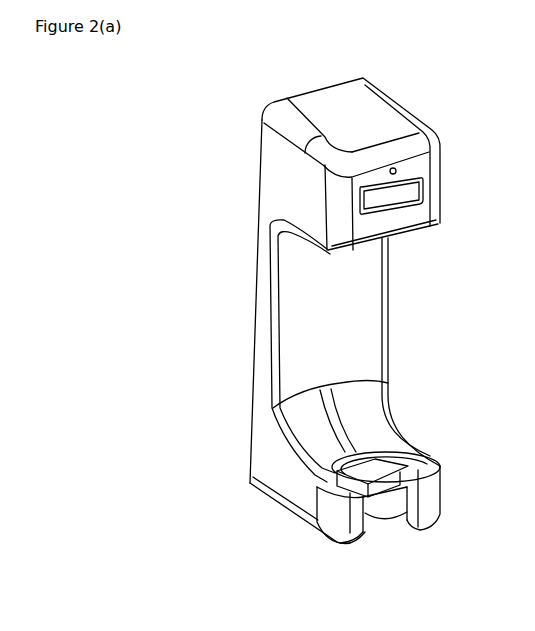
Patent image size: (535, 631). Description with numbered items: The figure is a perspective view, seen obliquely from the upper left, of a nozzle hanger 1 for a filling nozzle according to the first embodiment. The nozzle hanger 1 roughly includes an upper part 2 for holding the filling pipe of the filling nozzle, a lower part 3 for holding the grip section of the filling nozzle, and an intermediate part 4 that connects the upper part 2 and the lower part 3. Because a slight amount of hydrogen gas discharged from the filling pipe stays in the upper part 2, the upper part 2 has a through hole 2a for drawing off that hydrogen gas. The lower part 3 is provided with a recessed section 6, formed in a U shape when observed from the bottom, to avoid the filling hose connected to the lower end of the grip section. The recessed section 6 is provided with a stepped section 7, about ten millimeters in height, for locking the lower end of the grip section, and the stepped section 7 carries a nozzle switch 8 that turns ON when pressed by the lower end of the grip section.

The nozzle hanger 1 is at (179, 84).
The upper part 2 is at (353, 107).
The through hole 2a is at (397, 170).
The lower part 3 is at (280, 510).
The intermediate part 4 is at (254, 293).
The recessed section 6 is at (385, 535).
The stepped section 7 is at (392, 466).
The nozzle switch 8 is at (363, 470).